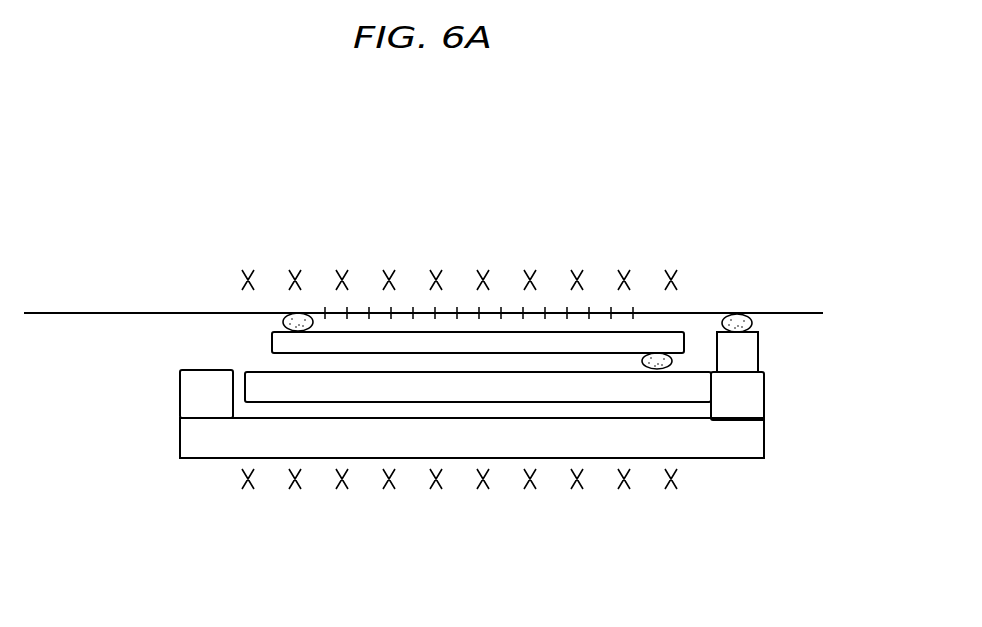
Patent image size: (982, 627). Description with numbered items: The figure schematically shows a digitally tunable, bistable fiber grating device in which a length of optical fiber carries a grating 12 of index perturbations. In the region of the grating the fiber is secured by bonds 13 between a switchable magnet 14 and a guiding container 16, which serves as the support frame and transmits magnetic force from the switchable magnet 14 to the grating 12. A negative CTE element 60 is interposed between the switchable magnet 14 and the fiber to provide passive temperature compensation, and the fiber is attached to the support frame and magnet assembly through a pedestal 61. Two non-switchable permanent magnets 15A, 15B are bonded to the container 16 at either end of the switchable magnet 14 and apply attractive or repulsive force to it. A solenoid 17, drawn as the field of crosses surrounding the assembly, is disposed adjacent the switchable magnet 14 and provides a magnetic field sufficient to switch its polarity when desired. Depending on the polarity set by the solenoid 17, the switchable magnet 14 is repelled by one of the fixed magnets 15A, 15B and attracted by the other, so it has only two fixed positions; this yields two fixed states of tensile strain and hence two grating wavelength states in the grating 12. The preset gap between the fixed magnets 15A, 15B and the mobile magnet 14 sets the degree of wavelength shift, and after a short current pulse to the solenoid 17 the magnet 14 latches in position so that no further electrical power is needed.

The grating 12 is at (458, 313).
The solenoid 17 is at (343, 271).
The negative CTE element 60 is at (602, 332).
The bond 13 is at (740, 314).
The pedestal 61 is at (759, 347).
The switchable magnet 14 is at (442, 403).
The non-switchable magnet 15A is at (180, 393).
The non-switchable magnet 15B is at (765, 398).
The guiding container 16 is at (653, 460).